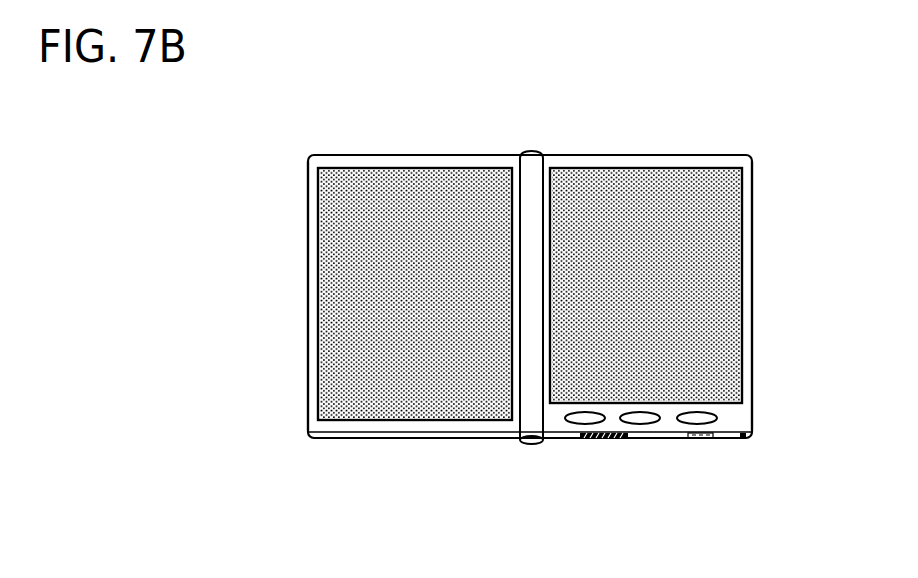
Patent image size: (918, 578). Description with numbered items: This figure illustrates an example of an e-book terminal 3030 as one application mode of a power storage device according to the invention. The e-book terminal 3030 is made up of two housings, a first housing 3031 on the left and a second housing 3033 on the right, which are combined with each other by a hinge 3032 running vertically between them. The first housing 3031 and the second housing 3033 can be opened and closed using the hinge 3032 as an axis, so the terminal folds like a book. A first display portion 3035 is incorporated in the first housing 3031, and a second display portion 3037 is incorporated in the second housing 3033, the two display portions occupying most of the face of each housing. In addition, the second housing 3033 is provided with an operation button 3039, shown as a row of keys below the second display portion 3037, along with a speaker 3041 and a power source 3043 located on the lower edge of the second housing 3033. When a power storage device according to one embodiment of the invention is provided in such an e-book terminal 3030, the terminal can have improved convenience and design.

The e-book terminal 3030 is at (563, 142).
The first housing 3031 is at (314, 227).
The hinge 3032 is at (526, 440).
The second housing 3033 is at (747, 230).
The first display portion 3035 is at (353, 328).
The second display portion 3037 is at (710, 320).
The operation button 3039 is at (685, 421).
The speaker 3041 is at (600, 441).
The power source 3043 is at (692, 441).